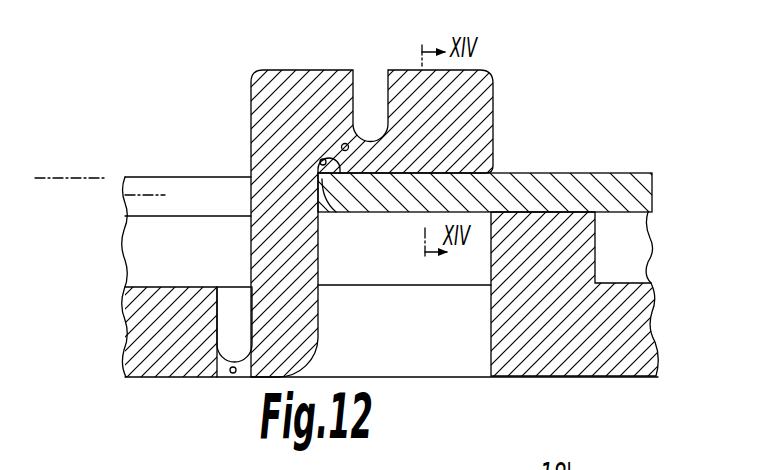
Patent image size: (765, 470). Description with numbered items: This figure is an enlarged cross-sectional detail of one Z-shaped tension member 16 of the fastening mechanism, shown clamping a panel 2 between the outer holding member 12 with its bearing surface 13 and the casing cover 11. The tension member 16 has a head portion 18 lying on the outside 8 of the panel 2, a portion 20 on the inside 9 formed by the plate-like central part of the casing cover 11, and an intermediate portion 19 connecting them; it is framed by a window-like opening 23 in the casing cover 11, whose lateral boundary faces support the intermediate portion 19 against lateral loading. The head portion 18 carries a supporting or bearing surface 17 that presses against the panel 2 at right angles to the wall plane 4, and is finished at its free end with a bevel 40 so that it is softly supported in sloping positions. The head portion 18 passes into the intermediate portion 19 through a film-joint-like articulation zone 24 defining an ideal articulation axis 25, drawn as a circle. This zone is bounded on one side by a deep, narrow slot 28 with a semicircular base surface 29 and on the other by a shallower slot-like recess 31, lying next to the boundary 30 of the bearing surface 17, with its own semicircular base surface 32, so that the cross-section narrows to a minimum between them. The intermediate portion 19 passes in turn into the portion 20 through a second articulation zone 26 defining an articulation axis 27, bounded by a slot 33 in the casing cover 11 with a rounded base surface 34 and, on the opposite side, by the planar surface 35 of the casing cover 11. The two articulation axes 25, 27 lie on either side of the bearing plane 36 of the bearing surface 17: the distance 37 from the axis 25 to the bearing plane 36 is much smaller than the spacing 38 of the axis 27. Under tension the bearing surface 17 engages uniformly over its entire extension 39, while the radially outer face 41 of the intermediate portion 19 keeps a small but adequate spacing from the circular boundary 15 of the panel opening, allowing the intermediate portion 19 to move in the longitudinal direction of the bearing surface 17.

The tension member 16 is at (230, 80).
The panel 2 is at (550, 190).
The holding member 12 is at (568, 240).
The surface of casing cover 35 is at (150, 378).
The rounded base surface 34 is at (247, 352).
The articulation axis 27 is at (233, 375).
The articulation zone 26 is at (220, 370).
The semicircular base surface 32 is at (320, 162).
The circular boundary 15 is at (322, 181).
The boundary of bearing surface 30 is at (342, 179).
The articulation zone 24 is at (348, 137).
The articulation axis 25 is at (342, 141).
The slot 28 is at (379, 87).
The semicircular base surface 29 is at (373, 137).
The head portion 18 is at (494, 83).
The extension of bearing surface 39 is at (483, 65).
The bevel or rounded portion 40 is at (498, 170).
The bearing surface 13 is at (575, 212).
The outside of panel 8 is at (638, 173).
The inside of panel 9 is at (630, 212).
The casing cover 11 is at (648, 338).
The window-like opening 23 is at (447, 352).
The radially outer face 41 is at (320, 266).
The supporting surface 17 is at (410, 178).
The slot-like recess 31 is at (317, 175).
The intermediate portion 19 is at (278, 238).
The portion on inside 20 is at (169, 300).
The slot 33 is at (232, 300).
The wall plane 4 is at (155, 193).
The bearing plane 36 is at (70, 180).
The distance 37 is at (41, 120).
The spacing 38 is at (118, 376).